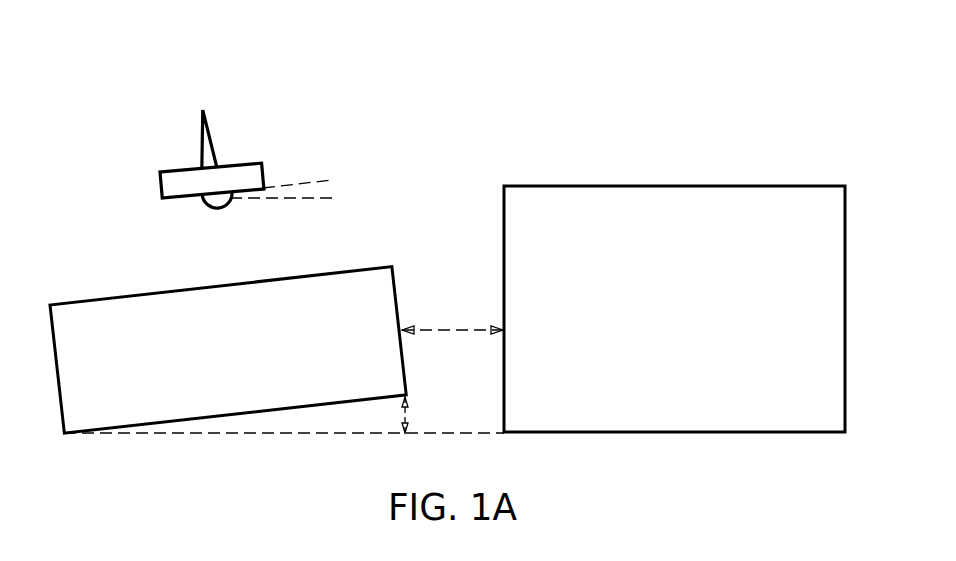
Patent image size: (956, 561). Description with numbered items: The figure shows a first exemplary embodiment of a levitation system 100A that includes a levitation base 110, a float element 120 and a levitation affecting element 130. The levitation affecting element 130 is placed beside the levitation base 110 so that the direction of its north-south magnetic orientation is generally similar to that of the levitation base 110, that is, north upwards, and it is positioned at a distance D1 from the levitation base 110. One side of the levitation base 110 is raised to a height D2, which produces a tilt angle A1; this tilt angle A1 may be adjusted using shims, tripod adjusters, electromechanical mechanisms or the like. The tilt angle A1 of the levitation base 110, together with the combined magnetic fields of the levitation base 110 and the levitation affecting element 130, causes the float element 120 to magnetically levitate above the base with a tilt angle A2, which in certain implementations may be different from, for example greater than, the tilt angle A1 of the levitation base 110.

The levitation system 100A is at (486, 91).
The levitation base 110 is at (78, 302).
The float element 120 is at (248, 168).
The levitation affecting element 130 is at (743, 185).
The distance D1 is at (450, 330).
The height D2 is at (410, 413).
The tilt angle of the levitation base A1 is at (282, 412).
The tilt angle of the float element A2 is at (313, 190).